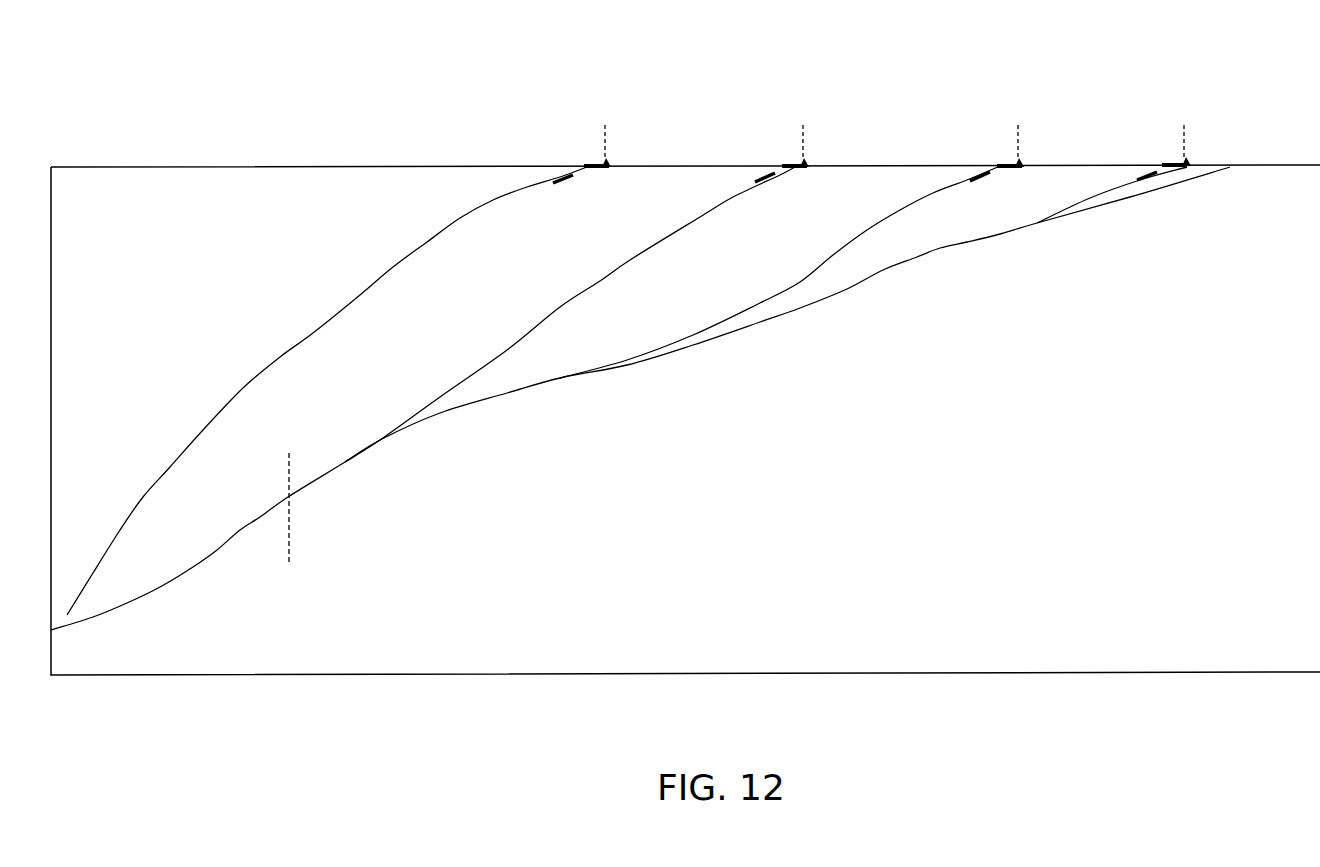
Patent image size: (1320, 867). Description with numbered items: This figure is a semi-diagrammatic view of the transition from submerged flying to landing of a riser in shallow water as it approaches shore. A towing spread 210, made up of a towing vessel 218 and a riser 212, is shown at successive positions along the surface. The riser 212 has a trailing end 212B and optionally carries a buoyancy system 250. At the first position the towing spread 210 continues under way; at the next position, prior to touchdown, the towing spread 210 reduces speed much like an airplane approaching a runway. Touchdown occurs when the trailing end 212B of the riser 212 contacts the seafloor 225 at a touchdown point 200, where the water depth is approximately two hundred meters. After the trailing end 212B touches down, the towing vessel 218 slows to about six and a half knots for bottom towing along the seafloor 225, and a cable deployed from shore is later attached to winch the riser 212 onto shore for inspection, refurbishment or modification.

The towing spread 210 is at (898, 55).
The riser 212 is at (364, 292).
The trailing end 212B is at (259, 522).
The towing vessel 218 is at (605, 160).
The touchdown point 200 is at (292, 500).
The seafloor 225 is at (898, 481).
The buoyancy system 250 is at (572, 178).